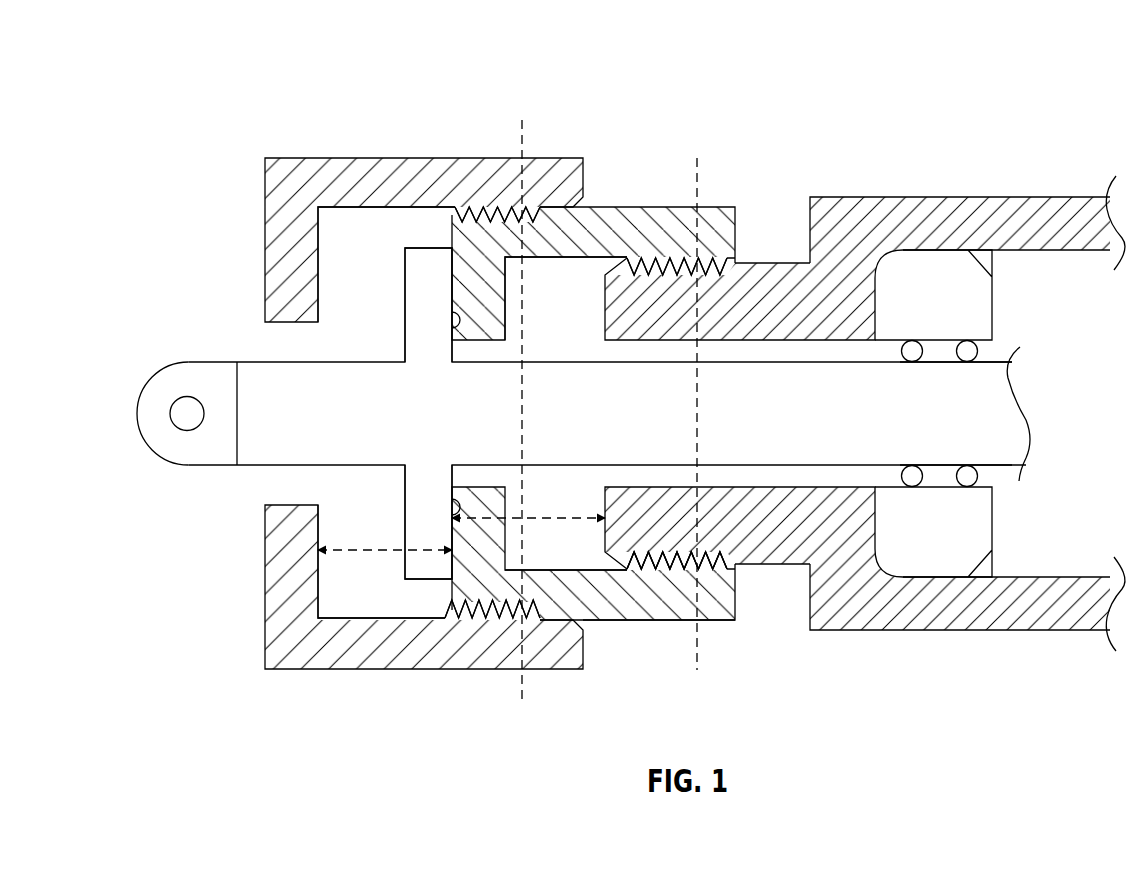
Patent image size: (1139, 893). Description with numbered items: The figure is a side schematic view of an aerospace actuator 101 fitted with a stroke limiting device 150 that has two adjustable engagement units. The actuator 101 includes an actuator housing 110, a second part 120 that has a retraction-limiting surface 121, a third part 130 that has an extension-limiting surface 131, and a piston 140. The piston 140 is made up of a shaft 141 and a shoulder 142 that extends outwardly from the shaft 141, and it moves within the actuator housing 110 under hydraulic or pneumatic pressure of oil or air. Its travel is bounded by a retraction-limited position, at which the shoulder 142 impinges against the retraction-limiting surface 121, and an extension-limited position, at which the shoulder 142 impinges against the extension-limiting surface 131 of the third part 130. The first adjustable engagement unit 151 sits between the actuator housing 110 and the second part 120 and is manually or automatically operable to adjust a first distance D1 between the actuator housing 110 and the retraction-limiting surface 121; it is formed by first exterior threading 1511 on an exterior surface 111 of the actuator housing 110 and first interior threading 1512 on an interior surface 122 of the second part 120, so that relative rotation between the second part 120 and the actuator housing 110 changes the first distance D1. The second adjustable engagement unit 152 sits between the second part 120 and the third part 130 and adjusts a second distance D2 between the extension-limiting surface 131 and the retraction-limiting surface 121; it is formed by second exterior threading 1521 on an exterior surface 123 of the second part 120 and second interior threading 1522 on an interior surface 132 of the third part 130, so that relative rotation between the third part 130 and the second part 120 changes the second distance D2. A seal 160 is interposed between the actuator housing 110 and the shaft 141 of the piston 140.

The aerospace actuator 101 is at (205, 62).
The actuator housing 110 is at (852, 195).
The exterior surface of the actuator housing 111 is at (782, 563).
The second part 120 is at (635, 205).
The retraction-limiting surface 121 is at (450, 330).
The interior surface of the second part 122 is at (580, 262).
The exterior surface of the second part 123 is at (585, 622).
The third part 130 is at (340, 152).
The extension-limiting surface 131 is at (317, 273).
The interior surface of the third part 132 is at (445, 612).
The piston 140 is at (205, 352).
The shaft 141 is at (988, 445).
The shoulder 142 is at (402, 507).
The stroke limiting device 150 is at (552, 178).
The first adjustable engagement unit 151 is at (735, 270).
The second adjustable engagement unit 152 is at (455, 210).
The first exterior threading 1511 is at (700, 555).
The first interior threading 1512 is at (722, 562).
The second exterior threading 1521 is at (540, 585).
The second interior threading 1522 is at (490, 620).
The seal 160 is at (972, 300).
The first distance D1 is at (507, 517).
The second distance D2 is at (382, 550).